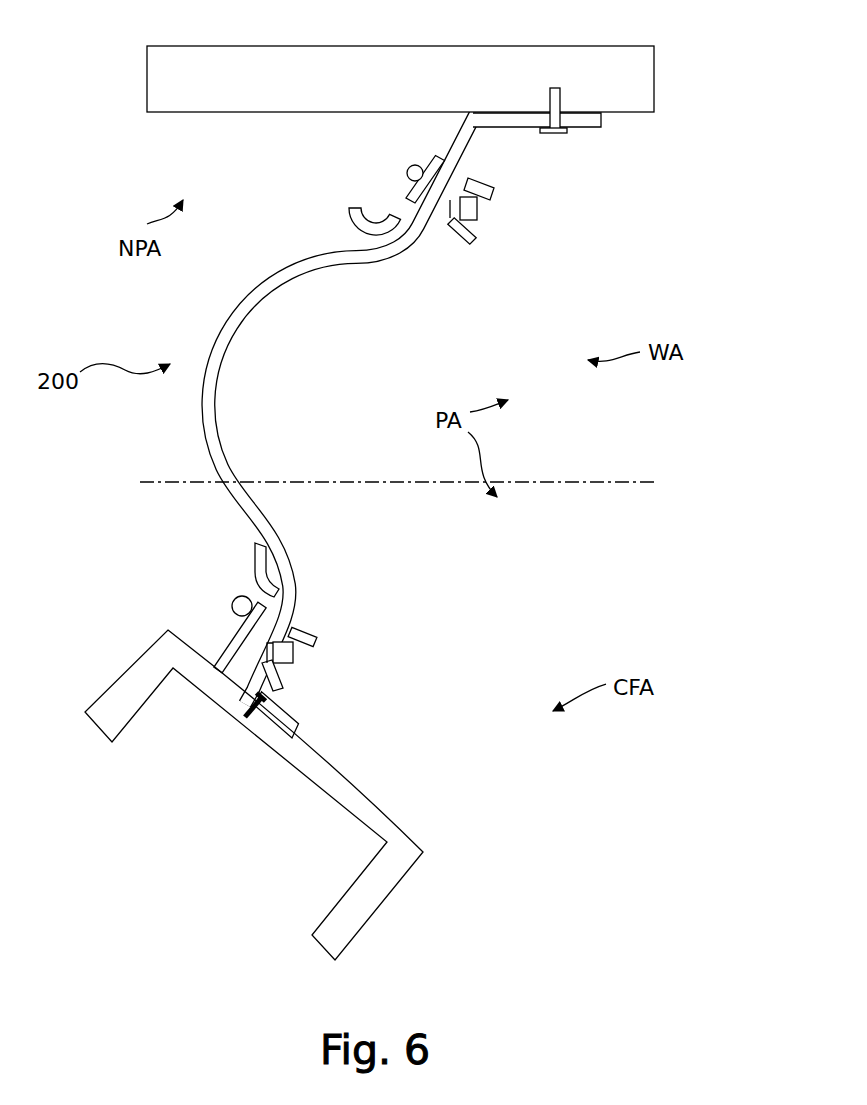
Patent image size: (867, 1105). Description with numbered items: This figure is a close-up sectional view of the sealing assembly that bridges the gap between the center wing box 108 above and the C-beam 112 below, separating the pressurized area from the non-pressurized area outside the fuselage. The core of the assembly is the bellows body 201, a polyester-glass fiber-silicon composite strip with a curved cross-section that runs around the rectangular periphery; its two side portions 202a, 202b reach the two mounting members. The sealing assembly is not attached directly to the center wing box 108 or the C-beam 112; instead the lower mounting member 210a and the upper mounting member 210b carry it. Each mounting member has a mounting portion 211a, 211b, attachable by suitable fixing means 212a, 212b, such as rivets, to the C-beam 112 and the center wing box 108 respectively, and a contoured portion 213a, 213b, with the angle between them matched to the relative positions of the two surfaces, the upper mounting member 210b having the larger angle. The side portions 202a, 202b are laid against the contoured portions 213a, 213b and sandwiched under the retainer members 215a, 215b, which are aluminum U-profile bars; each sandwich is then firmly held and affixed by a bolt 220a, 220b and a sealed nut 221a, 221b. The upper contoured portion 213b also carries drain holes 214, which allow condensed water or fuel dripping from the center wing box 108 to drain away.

The center wing box 108 is at (654, 66).
The C-beam 112 is at (362, 898).
The bellows body 201 is at (246, 313).
The side portion 202a is at (296, 583).
The side portion 202b is at (407, 250).
The lower mounting member 210a is at (221, 645).
The upper mounting member 210b is at (432, 145).
The mounting portion 211a is at (290, 722).
The mounting portion 211b is at (522, 118).
The lower fastener pin 212a is at (250, 722).
The upper fastener pin 212b is at (566, 130).
The contoured portion 213a is at (257, 587).
The contoured portion 213b is at (371, 225).
The drain holes 214 is at (392, 232).
The retainer member 215a is at (318, 640).
The retainer member 215b is at (494, 196).
The bolt 220a is at (298, 663).
The bolt 220b is at (480, 238).
The sealed nut 221a is at (236, 600).
The sealed nut 221b is at (407, 170).